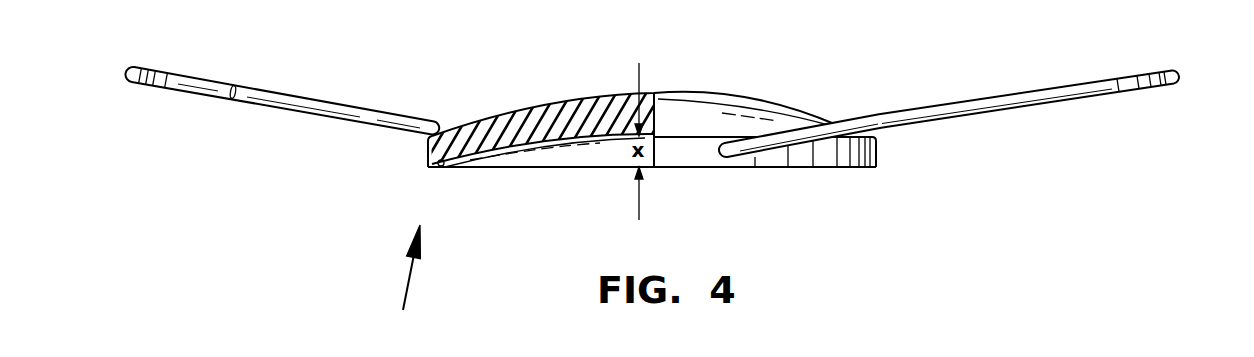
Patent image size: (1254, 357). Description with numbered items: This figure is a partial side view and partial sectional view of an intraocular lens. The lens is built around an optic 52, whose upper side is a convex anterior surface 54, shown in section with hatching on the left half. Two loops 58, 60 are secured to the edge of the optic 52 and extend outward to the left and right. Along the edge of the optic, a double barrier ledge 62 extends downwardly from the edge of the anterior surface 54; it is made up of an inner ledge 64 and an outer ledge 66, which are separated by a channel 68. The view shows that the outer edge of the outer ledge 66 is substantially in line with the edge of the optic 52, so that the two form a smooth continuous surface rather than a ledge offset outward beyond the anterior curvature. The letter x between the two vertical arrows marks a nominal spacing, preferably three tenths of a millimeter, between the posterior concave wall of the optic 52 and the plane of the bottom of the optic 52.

The optic 52 is at (701, 93).
The convex anterior surface 54 is at (763, 102).
The loop 58 is at (130, 72).
The loop 60 is at (1173, 75).
The double barrier ledge 62 is at (405, 281).
The inner ledge 64 is at (448, 167).
The outer ledge 66 is at (432, 167).
The channel 68 is at (441, 167).